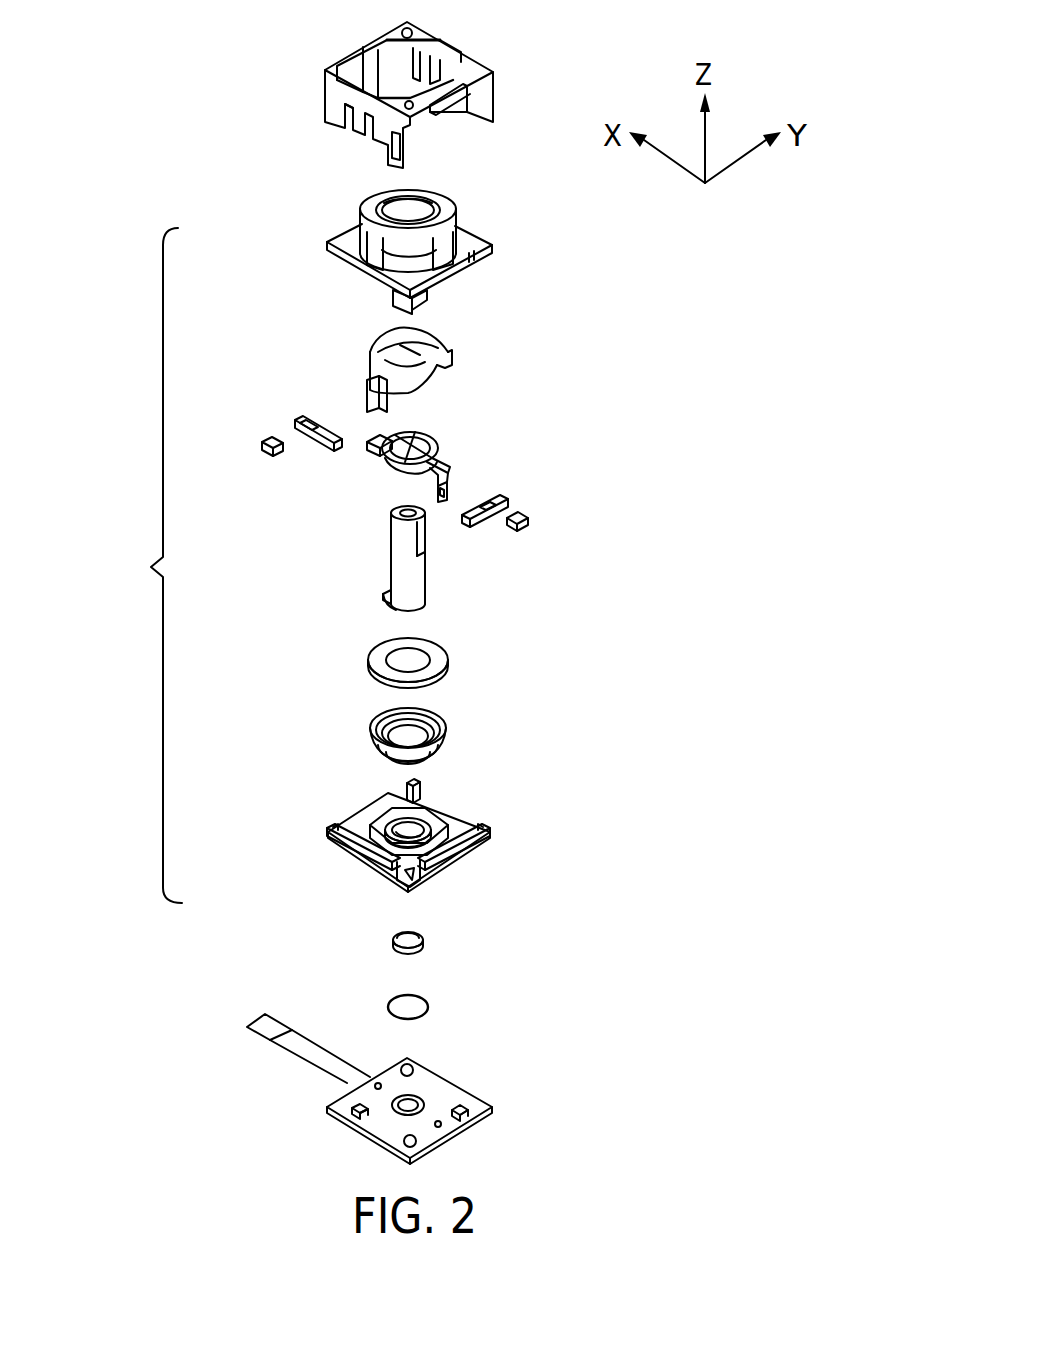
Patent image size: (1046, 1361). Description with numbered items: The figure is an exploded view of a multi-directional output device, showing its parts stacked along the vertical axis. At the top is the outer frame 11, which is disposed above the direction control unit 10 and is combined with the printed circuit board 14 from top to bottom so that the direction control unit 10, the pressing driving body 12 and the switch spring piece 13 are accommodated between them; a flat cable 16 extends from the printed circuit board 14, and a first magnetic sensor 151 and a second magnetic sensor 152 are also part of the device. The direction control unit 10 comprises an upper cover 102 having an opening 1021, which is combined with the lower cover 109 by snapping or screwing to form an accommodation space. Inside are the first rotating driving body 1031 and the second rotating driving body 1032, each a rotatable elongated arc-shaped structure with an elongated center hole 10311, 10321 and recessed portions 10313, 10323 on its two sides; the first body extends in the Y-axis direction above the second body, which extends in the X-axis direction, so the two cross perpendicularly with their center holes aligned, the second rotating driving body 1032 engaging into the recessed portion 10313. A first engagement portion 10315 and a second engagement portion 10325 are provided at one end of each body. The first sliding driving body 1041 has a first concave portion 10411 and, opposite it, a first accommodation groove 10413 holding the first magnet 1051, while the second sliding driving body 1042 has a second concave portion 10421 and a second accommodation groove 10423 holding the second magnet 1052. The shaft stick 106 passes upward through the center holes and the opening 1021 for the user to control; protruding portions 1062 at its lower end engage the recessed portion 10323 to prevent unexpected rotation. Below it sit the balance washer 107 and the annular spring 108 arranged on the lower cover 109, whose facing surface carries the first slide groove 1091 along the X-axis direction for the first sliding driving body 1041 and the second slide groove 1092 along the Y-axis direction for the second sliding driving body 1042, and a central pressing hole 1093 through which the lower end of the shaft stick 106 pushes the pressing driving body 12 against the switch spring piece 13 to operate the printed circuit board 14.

The direction control unit 10 is at (149, 565).
The outer frame 11 is at (472, 54).
The pressing driving body 12 is at (438, 940).
The switch spring piece 13 is at (438, 1006).
The printed circuit board 14 is at (443, 1077).
The flat cable 16 is at (292, 1050).
The upper cover 102 is at (350, 253).
The shaft stick 106 is at (378, 574).
The balance washer 107 is at (368, 662).
The annular spring 108 is at (372, 730).
The lower cover 109 is at (350, 813).
The first magnetic sensor 151 is at (347, 1117).
The second magnetic sensor 152 is at (470, 1117).
The opening 1021 is at (417, 210).
The first rotating driving body 1031 is at (447, 340).
The second rotating driving body 1032 is at (443, 448).
The first sliding driving body 1041 is at (295, 424).
The second sliding driving body 1042 is at (505, 496).
The first magnet 1051 is at (268, 450).
The second magnet 1052 is at (527, 521).
The protruding portion 1062 is at (428, 586).
The first slide groove 1091 is at (332, 847).
The second slide groove 1092 is at (443, 845).
The pressing hole 1093 is at (420, 828).
The elongated center hole 10311 is at (376, 346).
The recessed portion 10313 is at (430, 373).
The first engagement portion 10315 is at (367, 403).
The elongated center hole 10321 is at (438, 434).
The recessed portion 10323 is at (378, 474).
The second engagement portion 10325 is at (443, 502).
The first concave portion 10411 is at (332, 430).
The first accommodation groove 10413 is at (303, 437).
The second concave portion 10421 is at (473, 507).
The second accommodation groove 10423 is at (495, 512).